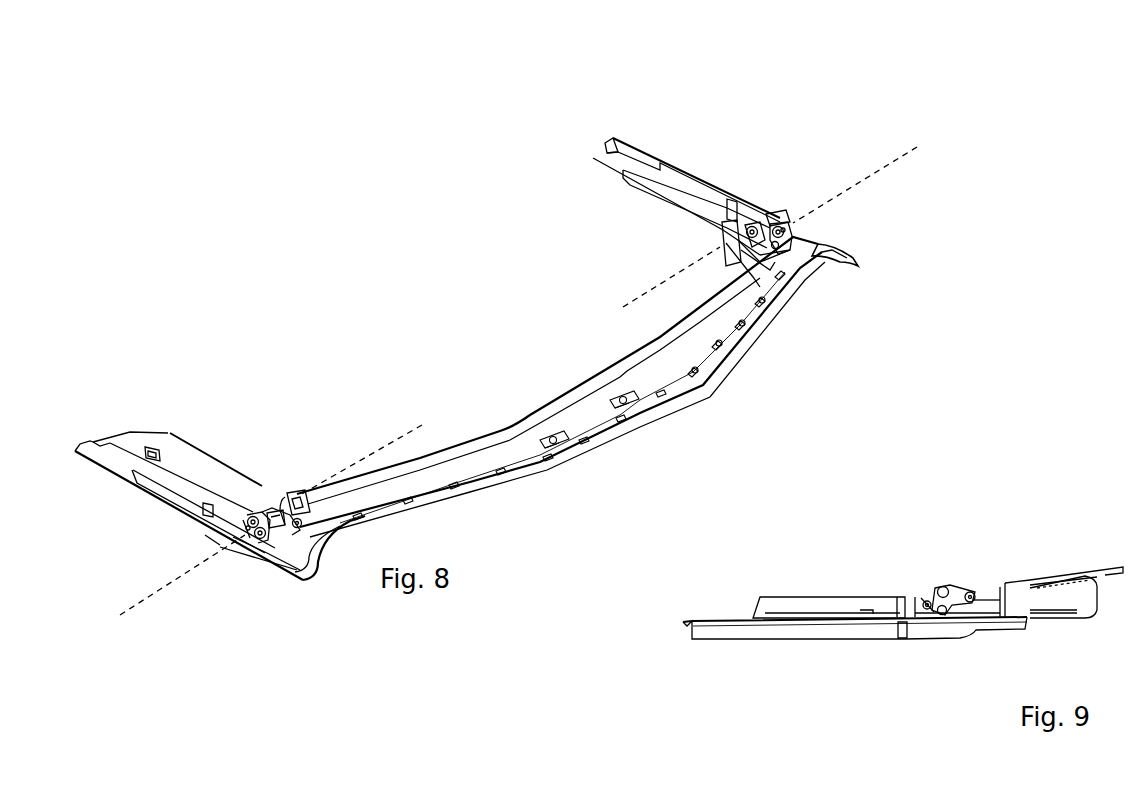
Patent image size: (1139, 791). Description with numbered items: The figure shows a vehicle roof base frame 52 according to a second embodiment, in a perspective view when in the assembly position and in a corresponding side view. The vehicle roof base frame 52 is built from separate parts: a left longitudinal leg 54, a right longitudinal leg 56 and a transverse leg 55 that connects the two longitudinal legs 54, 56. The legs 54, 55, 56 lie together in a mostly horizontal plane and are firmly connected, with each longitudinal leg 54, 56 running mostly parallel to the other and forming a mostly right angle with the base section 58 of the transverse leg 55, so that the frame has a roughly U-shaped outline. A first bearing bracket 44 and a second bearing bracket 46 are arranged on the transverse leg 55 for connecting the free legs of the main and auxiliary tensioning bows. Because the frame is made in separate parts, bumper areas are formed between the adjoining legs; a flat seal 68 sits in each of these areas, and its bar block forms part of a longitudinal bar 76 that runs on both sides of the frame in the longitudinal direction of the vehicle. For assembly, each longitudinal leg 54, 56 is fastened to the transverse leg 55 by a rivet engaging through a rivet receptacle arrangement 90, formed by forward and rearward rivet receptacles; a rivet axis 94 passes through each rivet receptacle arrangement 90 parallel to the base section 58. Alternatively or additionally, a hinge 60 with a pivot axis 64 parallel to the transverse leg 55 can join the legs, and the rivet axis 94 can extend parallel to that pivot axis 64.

In FIG. 8, the first bearing bracket 44 is at (256, 505).
In FIG. 8, the second bearing bracket 46 is at (323, 527).
In FIG. 8, the vehicle roof base frame 52 is at (621, 130).
In FIG. 8, the left longitudinal leg 54 is at (160, 505).
In FIG. 9, the left longitudinal leg 54 is at (783, 641).
In FIG. 8, the transverse leg 55 is at (767, 320).
In FIG. 9, the transverse leg 55 is at (943, 640).
In FIG. 8, the right longitudinal leg 56 is at (655, 150).
In FIG. 8, the base section 58 is at (632, 436).
In FIG. 8, the hinge 60 is at (298, 492).
In FIG. 9, the hinge 60 is at (945, 582).
In FIG. 8, the pivot axis 64 is at (510, 371).
In FIG. 8, the flat seal 68 is at (212, 541).
In FIG. 9, the flat seal 68 is at (905, 640).
In FIG. 8, the longitudinal bar 76 is at (131, 485).
In FIG. 8, the rivet receptacle arrangement 90 is at (257, 542).
In FIG. 9, the rivet receptacle arrangement 90 is at (930, 595).
In FIG. 8, the rivet axis 94 is at (516, 388).